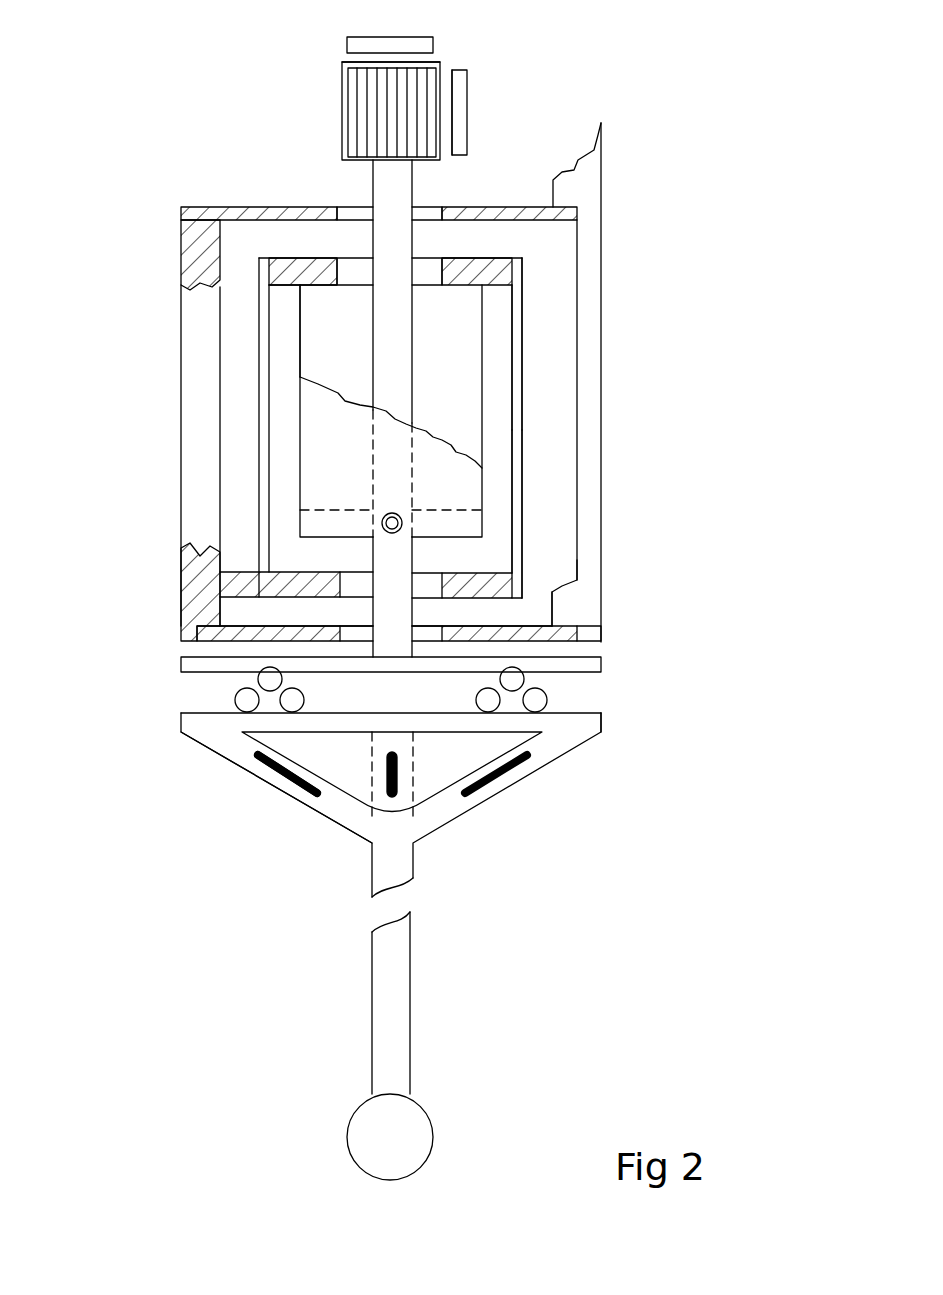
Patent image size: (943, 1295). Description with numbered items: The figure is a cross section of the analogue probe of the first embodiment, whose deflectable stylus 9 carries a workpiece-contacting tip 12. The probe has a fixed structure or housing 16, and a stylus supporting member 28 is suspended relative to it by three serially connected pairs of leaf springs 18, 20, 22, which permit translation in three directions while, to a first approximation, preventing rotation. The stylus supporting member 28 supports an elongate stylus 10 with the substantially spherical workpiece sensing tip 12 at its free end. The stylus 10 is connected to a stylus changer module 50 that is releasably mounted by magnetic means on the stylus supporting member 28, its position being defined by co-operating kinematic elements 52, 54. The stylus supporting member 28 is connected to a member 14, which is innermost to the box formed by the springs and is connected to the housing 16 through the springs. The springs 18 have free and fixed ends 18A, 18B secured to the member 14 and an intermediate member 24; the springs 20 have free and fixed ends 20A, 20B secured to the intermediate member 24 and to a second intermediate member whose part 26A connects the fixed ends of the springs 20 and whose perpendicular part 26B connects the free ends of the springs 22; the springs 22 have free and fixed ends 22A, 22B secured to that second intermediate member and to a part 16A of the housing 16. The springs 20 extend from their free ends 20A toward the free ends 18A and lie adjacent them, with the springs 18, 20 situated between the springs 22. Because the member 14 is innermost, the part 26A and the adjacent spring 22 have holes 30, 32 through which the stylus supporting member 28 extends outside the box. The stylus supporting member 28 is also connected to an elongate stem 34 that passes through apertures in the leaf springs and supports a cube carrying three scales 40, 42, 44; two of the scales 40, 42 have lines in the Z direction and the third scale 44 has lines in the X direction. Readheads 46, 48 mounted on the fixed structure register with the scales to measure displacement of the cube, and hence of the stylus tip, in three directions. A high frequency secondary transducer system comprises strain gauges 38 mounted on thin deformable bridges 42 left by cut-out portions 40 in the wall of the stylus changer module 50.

The deflectable stylus 9 is at (560, 835).
The elongate stylus 10 is at (403, 967).
The workpiece sensing tip 12 is at (415, 1155).
The member 14 is at (470, 528).
The fixed structure 16 is at (605, 250).
The part of the housing 16A is at (593, 608).
The leaf springs 18 is at (310, 428).
The free end of springs 18 18A is at (322, 497).
The fixed end of springs 18 18B is at (312, 296).
The leaf springs 20 is at (265, 372).
The free end of springs 20 20A is at (527, 308).
The fixed end of springs 20 20B is at (523, 548).
The leaf springs 22 is at (245, 207).
The free end of springs 22 22A is at (218, 637).
The fixed end of springs 22 22B is at (603, 640).
The intermediate member 24 is at (318, 258).
The part of second intermediate member 26A is at (262, 576).
The perpendicular part of second intermediate member 26B is at (197, 578).
The stylus supporting member 28 is at (165, 672).
The hole 30 is at (362, 636).
The hole 32 is at (360, 590).
The elongate stem 34 is at (402, 198).
The strain gauges 38 is at (318, 790).
The scale / cut-out portions 40 is at (443, 82).
The scale / deformable bridges 42 is at (360, 76).
The scale 44 is at (437, 63).
The readhead 46 is at (460, 110).
The readhead 48 is at (356, 45).
The stylus changer module 50 is at (186, 740).
The kinematic element 52 is at (557, 702).
The kinematic element 54 is at (540, 682).